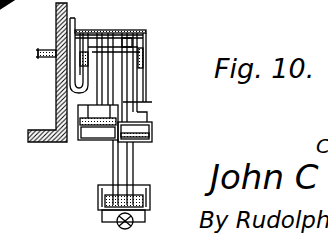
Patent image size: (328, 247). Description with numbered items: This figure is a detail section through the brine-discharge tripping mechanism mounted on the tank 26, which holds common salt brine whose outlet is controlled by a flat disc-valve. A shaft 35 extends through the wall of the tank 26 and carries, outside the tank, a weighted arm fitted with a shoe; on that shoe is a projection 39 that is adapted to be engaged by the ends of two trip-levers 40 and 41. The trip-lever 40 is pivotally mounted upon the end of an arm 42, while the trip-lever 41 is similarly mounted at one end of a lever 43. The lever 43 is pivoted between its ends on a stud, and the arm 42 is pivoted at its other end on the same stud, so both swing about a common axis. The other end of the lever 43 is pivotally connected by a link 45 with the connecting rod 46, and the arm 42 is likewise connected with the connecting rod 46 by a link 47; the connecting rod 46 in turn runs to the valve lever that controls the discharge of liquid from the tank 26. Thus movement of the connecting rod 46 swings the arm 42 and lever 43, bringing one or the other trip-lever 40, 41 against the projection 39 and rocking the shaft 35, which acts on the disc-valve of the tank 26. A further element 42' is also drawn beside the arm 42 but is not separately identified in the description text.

The supporting bracket 26 is at (56, 112).
The plate 35 is at (42, 59).
The pin 39 is at (127, 47).
The housing 40 is at (143, 52).
The plunger rod 41 is at (133, 99).
The bearing 42 is at (147, 77).
The bearing block 42' is at (79, 136).
The lever 43 is at (181, 6).
The arm 45 is at (137, 182).
The roller 46 is at (108, 226).
The guide 47 is at (113, 168).